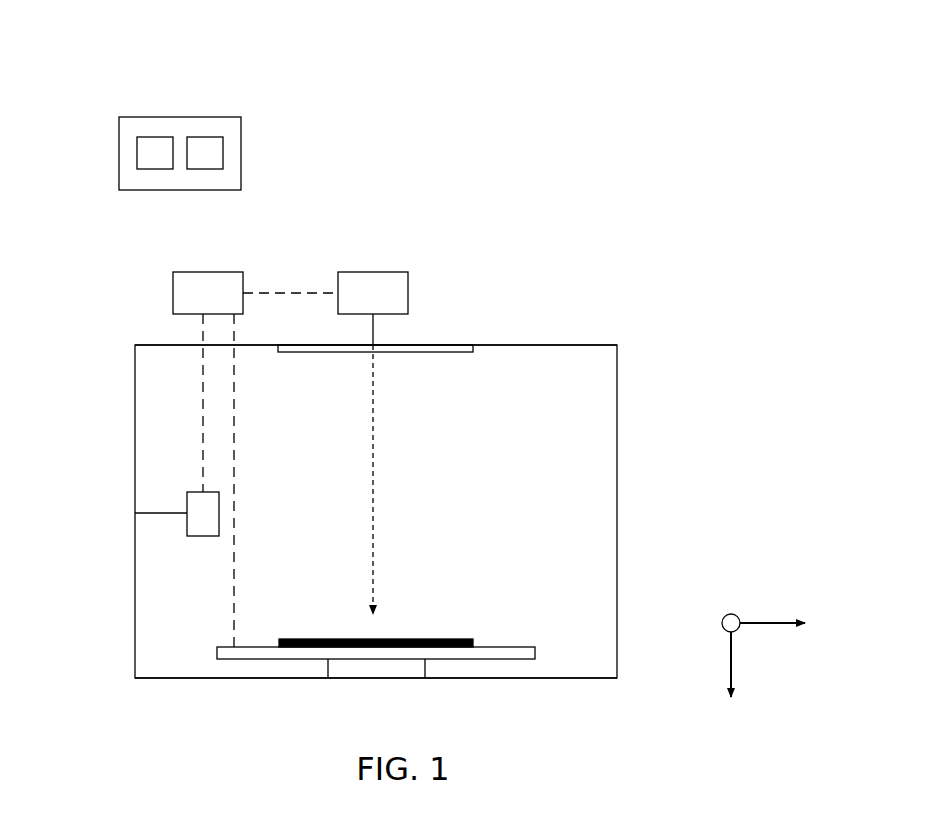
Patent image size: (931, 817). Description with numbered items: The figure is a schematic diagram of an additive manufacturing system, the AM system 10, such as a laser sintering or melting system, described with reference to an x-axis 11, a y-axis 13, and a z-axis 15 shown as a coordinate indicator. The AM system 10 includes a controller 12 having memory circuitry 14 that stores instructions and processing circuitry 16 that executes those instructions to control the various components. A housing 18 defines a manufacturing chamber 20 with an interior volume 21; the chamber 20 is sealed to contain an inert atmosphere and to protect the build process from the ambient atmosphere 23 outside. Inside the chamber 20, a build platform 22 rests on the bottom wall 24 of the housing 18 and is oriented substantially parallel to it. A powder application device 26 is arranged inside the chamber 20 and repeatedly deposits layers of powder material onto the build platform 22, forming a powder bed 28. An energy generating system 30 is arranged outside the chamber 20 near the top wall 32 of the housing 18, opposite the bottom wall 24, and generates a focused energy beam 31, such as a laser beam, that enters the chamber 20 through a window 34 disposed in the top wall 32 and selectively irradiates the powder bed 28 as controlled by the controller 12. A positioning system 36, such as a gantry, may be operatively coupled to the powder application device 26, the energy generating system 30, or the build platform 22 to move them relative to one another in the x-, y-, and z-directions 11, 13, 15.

The AM system 10 is at (146, 61).
The x-axis 11 is at (765, 618).
The controller 12 is at (186, 117).
The y-axis 13 is at (720, 612).
The memory circuitry 14 is at (137, 150).
The z-axis 15 is at (733, 660).
The processing circuitry 16 is at (223, 150).
The housing 18 is at (618, 408).
The manufacturing chamber 20 is at (580, 393).
The interior volume 21 is at (482, 490).
The build platform 22 is at (515, 647).
The ambient atmosphere 23 is at (710, 366).
The bottom wall 24 is at (565, 678).
The powder application device 26 is at (197, 537).
The powder bed 28 is at (447, 639).
The energy generating system 30 is at (375, 272).
The focused energy beam 31 is at (375, 500).
The top wall 32 is at (553, 345).
The window 34 is at (440, 345).
The positioning system 36 is at (172, 290).